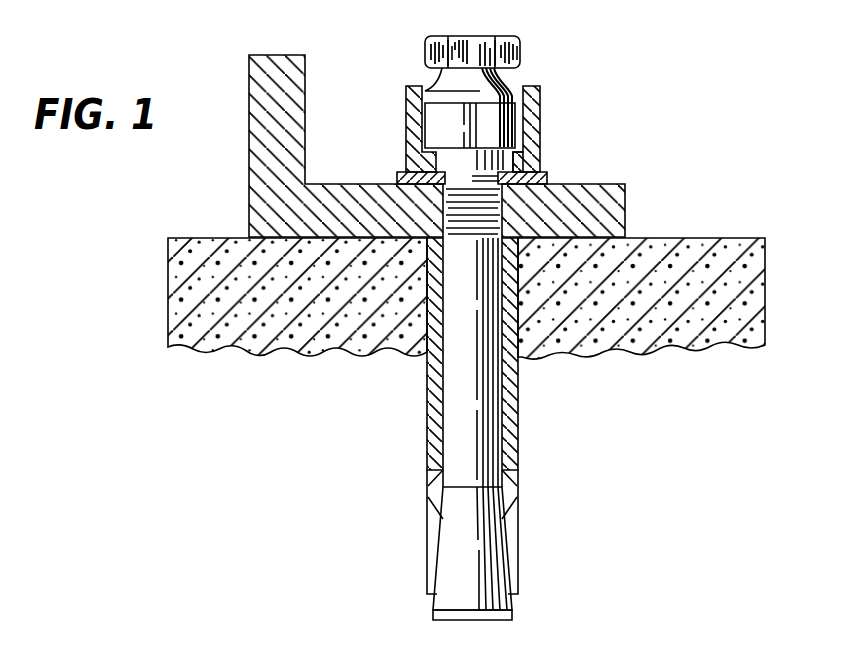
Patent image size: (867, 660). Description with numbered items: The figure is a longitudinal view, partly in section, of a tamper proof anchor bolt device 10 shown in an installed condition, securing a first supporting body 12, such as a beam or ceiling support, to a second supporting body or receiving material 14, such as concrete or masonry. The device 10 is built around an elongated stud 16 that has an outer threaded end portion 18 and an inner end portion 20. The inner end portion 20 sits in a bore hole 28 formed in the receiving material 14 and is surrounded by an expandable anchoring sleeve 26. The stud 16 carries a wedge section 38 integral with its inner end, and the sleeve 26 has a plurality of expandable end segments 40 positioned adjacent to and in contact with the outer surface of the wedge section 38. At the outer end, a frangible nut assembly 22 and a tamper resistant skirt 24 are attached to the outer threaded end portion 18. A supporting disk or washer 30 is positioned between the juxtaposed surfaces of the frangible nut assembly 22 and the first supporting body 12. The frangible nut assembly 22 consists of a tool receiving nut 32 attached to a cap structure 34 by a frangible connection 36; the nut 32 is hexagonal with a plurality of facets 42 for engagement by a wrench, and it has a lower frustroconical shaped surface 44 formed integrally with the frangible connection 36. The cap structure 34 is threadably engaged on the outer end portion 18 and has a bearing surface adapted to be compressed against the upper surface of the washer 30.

The tamper proof anchor bolt device 10 is at (401, 55).
The first supporting body 12 is at (252, 80).
The second supporting body or receiving material 14 is at (730, 238).
The elongated stud 16 is at (428, 378).
The outer threaded end portion 18 is at (505, 220).
The inner end portion 20 is at (440, 488).
The frangible nut assembly 22 is at (516, 32).
The tamper resistant skirt 24 is at (541, 152).
The expandable anchoring sleeve 26 is at (428, 438).
The bore hole 28 is at (518, 442).
The supporting disk or washer 30 is at (400, 178).
The tool receiving nut 32 is at (522, 52).
The cap structure 34 is at (537, 122).
The frangible connection 36 is at (424, 85).
The wedge section 38 is at (513, 605).
The expandable end segments 40 is at (428, 558).
The facets 42 is at (440, 45).
The lower frustroconical shaped surface 44 is at (515, 83).